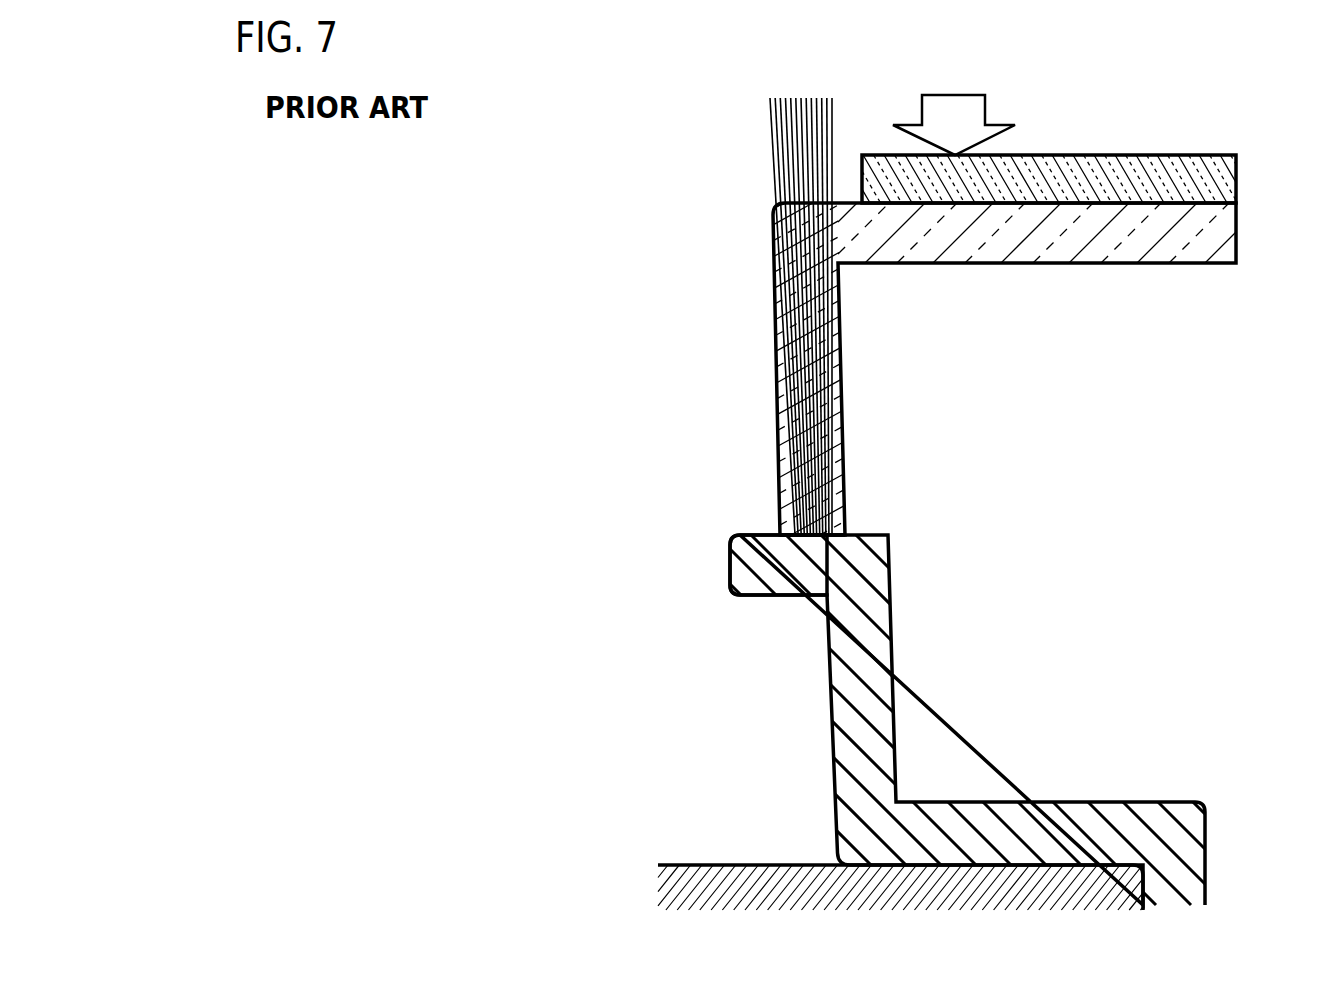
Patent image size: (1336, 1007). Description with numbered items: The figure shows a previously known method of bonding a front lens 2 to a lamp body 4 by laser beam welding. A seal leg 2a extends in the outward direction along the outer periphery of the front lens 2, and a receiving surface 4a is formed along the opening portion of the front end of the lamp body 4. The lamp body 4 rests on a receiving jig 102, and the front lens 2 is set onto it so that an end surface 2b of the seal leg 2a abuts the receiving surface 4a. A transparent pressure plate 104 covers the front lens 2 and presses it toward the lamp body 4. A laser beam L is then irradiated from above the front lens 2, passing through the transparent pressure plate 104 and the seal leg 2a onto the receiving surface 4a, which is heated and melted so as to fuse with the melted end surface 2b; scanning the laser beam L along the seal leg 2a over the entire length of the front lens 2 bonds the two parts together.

The laser beam L is at (795, 158).
The transparent pressure plate 104 is at (1075, 150).
The front lens 2 is at (954, 437).
The seal leg 2a is at (812, 393).
The end surface 2b is at (802, 538).
The lamp body 4 is at (945, 660).
The receiving surface 4a is at (767, 535).
The receiving jig 102 is at (740, 865).